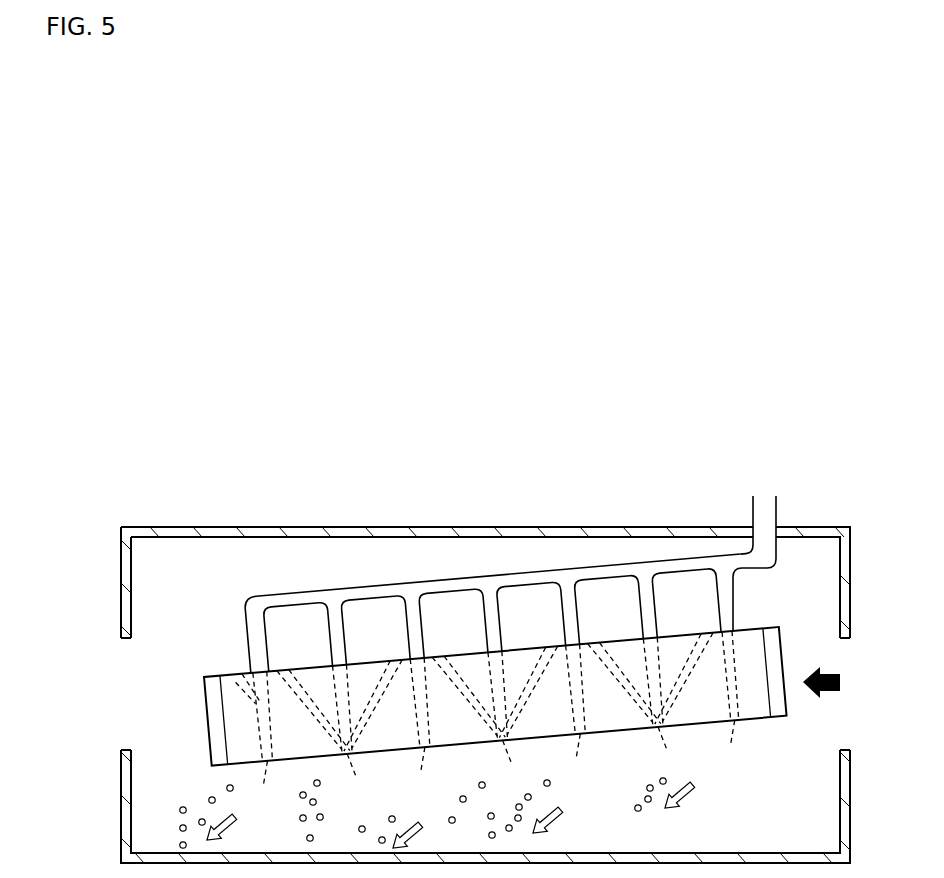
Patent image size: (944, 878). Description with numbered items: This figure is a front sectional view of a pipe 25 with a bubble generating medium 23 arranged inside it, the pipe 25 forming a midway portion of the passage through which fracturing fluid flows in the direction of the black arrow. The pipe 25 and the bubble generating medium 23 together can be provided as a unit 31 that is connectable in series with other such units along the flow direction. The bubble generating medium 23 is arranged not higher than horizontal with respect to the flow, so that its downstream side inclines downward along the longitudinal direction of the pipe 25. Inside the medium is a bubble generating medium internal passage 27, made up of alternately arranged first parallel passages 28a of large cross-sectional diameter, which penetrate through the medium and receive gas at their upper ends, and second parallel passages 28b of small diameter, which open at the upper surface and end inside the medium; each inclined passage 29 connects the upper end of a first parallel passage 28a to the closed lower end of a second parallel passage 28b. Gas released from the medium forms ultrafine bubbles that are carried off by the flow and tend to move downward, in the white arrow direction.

The bubble generating medium 23 is at (756, 638).
The pipe 25 is at (823, 527).
The bubble generating medium internal passage 27 is at (236, 680).
The first parallel passage 28a is at (505, 727).
The second parallel passage 28b is at (500, 721).
The inclined passage 29 is at (296, 669).
The unit 31 is at (154, 518).